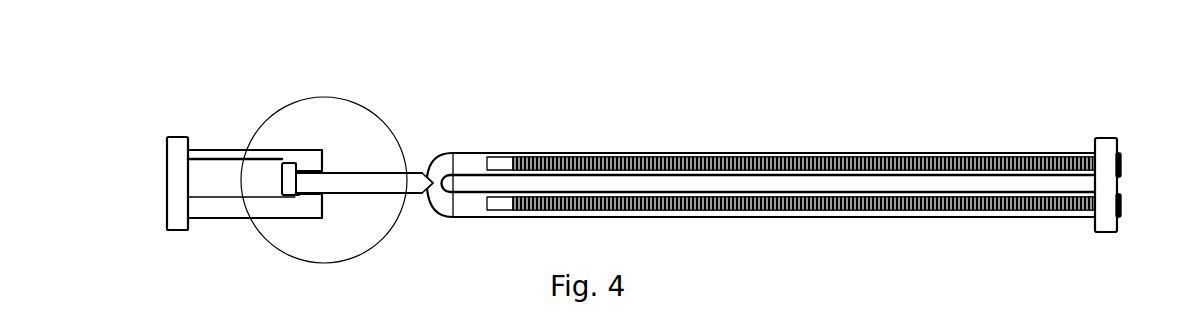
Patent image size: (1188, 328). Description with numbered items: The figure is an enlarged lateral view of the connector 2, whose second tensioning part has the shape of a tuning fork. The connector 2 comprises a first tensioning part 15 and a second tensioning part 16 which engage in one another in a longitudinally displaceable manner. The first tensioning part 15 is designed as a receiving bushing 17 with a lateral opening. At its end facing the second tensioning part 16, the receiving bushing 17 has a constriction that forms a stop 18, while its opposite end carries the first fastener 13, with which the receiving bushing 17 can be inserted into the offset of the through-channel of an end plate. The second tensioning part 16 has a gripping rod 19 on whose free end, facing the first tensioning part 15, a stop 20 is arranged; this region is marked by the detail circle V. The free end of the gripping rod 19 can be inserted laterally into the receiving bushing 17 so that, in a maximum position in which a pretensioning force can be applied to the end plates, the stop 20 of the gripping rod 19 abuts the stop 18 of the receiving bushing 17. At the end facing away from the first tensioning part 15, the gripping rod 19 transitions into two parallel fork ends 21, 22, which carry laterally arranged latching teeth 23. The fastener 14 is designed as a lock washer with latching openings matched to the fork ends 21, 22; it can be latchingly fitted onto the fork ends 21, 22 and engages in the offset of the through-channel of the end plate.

The connector 2 is at (442, 115).
The first fastener 13 is at (178, 152).
The fastener 14 is at (1108, 152).
The first tensioning part 15 is at (200, 240).
The second tensioning part 16 is at (618, 140).
The receiving bushing 17 is at (225, 172).
The stop 18 is at (297, 195).
The gripping rod 19 is at (352, 180).
The stop 20 is at (290, 180).
The fork end 21 is at (892, 155).
The fork end 22 is at (893, 208).
The latching teeth 23 is at (995, 155).
The detail V is at (277, 110).